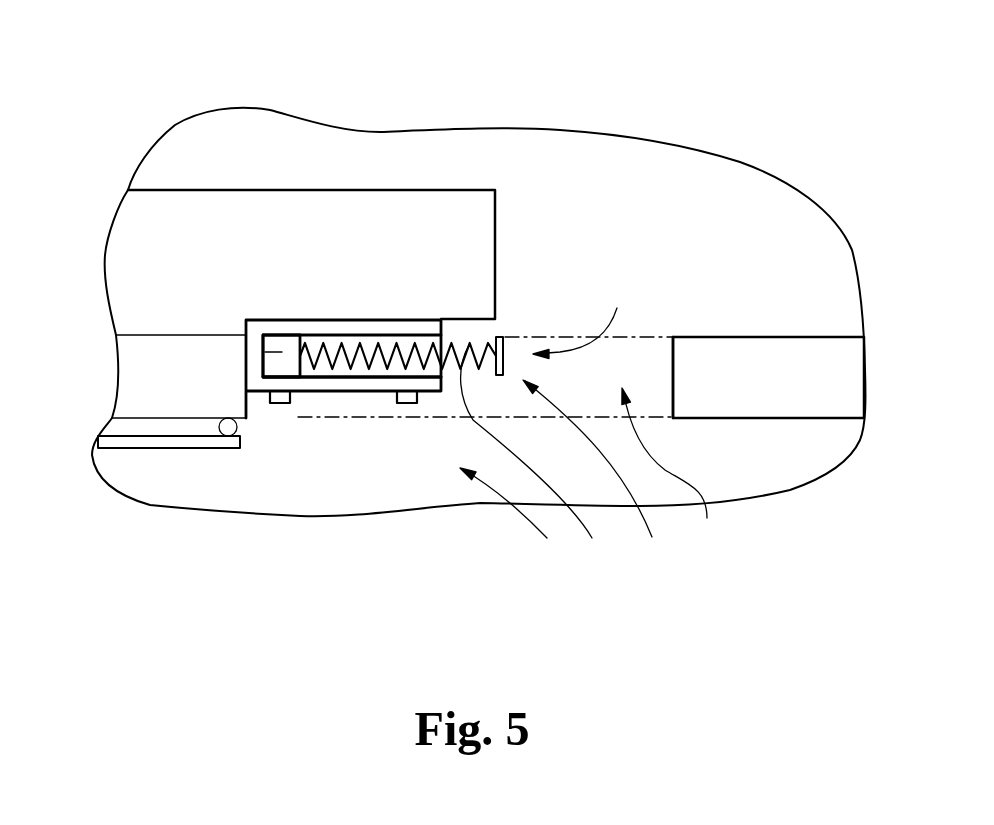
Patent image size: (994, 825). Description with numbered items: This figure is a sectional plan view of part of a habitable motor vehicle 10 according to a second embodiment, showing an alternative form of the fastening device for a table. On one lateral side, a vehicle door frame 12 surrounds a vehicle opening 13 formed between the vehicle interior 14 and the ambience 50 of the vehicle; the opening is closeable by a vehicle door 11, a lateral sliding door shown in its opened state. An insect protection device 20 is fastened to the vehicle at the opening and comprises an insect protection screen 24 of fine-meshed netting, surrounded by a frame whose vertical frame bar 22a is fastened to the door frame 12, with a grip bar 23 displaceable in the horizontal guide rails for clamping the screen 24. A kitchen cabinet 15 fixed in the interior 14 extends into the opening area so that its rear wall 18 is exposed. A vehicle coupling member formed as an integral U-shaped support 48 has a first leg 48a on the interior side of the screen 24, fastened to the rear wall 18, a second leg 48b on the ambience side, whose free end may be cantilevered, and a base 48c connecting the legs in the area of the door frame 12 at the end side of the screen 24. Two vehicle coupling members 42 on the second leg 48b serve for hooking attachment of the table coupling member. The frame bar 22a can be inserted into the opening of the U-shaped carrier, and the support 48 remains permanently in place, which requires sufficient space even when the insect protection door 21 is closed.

The habitable motor vehicle 10 is at (785, 372).
The vehicle door 11 is at (170, 442).
The vehicle door frame 12 is at (670, 377).
The vehicle opening 13 is at (673, 471).
The vehicle interior 14 is at (552, 207).
The vehicle-interior furniture item 15 is at (407, 233).
The furniture rear wall 18 is at (478, 336).
The insect protection device 20 is at (601, 476).
The insect protection door 21 is at (584, 318).
The frame bar 22a is at (282, 352).
The grip bar 23 is at (503, 343).
The insect protection screen 24 is at (542, 459).
The vehicle coupling member 42 is at (402, 404).
The vehicle coupling member (support) 48 is at (328, 387).
The first leg 48a is at (299, 333).
The second leg 48b is at (366, 389).
The base 48c is at (253, 367).
The vehicle ambience 50 is at (517, 520).